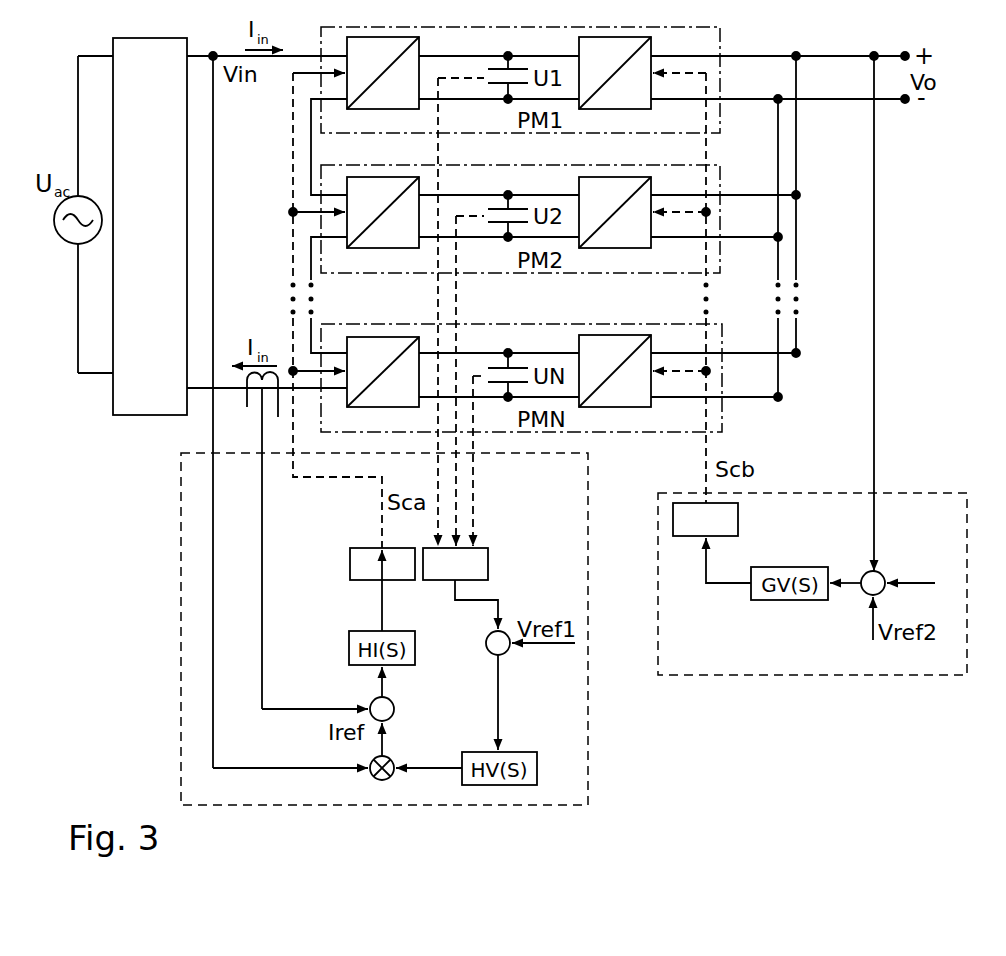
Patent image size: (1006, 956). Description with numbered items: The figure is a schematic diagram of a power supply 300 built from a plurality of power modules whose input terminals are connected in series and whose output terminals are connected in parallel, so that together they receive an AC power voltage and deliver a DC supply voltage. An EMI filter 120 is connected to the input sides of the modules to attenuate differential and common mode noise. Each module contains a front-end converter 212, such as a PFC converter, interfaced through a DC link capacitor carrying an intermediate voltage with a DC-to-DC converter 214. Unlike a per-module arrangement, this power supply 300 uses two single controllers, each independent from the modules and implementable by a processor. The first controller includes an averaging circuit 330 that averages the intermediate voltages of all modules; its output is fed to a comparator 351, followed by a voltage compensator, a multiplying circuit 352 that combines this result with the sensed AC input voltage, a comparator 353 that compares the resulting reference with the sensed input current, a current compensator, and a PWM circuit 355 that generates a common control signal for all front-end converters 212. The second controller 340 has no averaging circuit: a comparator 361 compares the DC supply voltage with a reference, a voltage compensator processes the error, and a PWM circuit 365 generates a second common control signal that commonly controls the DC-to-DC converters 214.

The EMI filter 120 is at (173, 326).
The front-end converter 212 is at (418, 103).
The DC-to-DC converter 214 is at (648, 103).
The power supply 300 is at (657, 734).
The averaging circuit 330 is at (488, 562).
The controller 340 is at (823, 675).
The comparator 351 is at (505, 656).
The multiplying circuit 352 is at (392, 757).
The comparator 353 is at (396, 704).
The PWM circuit 355 is at (351, 547).
The comparator 361 is at (885, 573).
The PWM circuit 365 is at (738, 519).